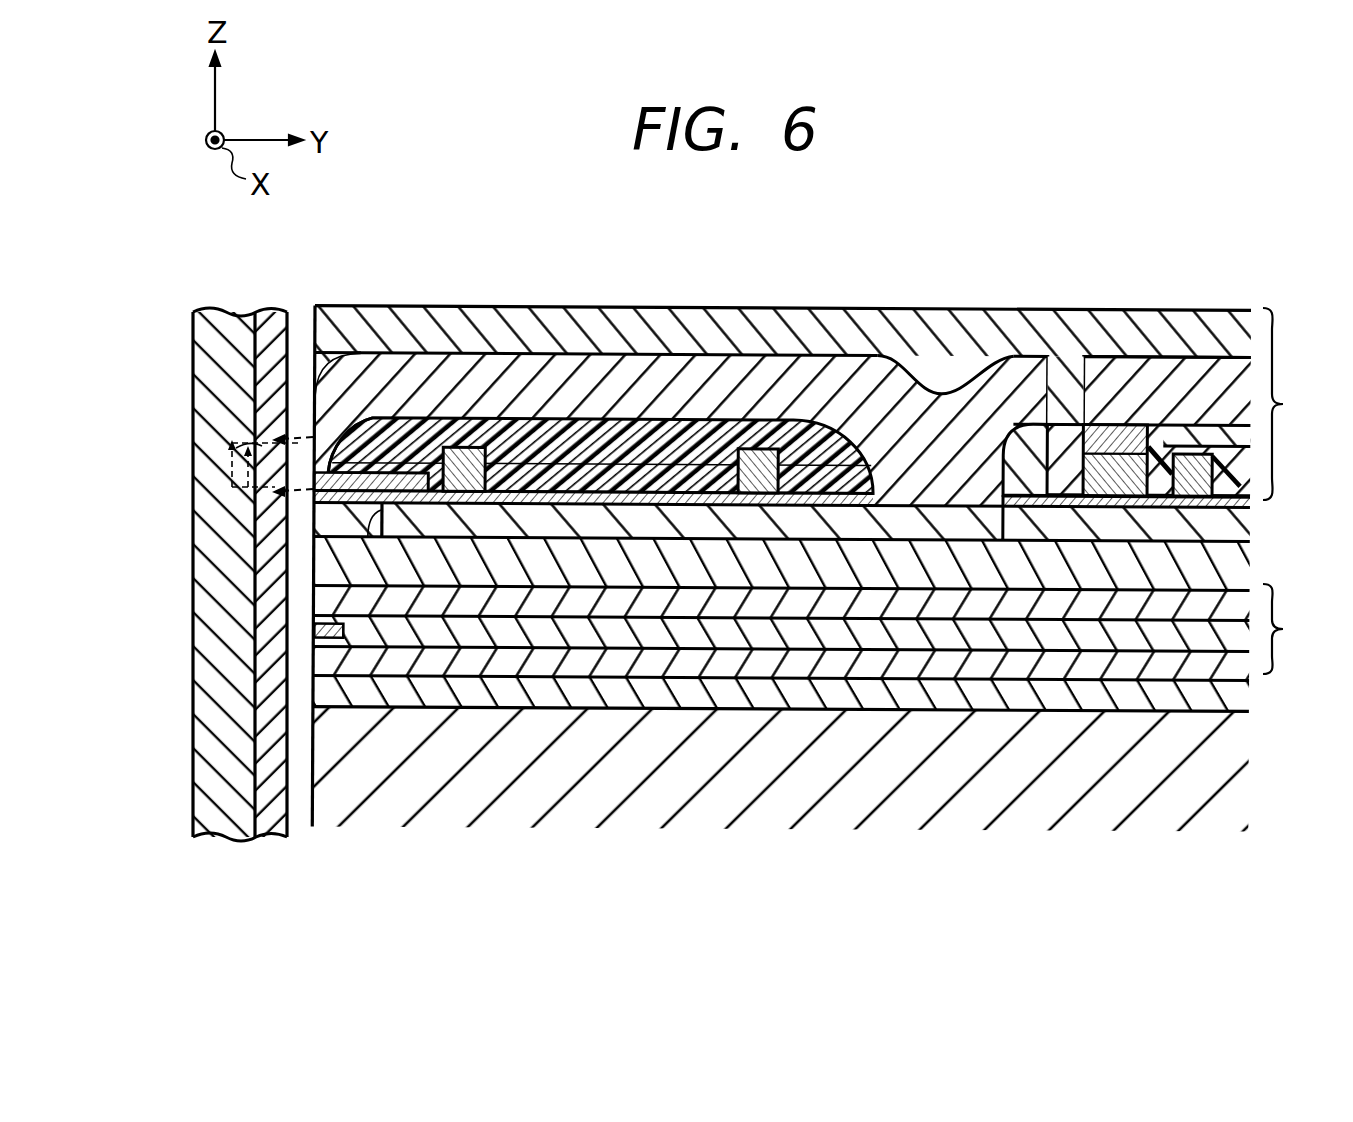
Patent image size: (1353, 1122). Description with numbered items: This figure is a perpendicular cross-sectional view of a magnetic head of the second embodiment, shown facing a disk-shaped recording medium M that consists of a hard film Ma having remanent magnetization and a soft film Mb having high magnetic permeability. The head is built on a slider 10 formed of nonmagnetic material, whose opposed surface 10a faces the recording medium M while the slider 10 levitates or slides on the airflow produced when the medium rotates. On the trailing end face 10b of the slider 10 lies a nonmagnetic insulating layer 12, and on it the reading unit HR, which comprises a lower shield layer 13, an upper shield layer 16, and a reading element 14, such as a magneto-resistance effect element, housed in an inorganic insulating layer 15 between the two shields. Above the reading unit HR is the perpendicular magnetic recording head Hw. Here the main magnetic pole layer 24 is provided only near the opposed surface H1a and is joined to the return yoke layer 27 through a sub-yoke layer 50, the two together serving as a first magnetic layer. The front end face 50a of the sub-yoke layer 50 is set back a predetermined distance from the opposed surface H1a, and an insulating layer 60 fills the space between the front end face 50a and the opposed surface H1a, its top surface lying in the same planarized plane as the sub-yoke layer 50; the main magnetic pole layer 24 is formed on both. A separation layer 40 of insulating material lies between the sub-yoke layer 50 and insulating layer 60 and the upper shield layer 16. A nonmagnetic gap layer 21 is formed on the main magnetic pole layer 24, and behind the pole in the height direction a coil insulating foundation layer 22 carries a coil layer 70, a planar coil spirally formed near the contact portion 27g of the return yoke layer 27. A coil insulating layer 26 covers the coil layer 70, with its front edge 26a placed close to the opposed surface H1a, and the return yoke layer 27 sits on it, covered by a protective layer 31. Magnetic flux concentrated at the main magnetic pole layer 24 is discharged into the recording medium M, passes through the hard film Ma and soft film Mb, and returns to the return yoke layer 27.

The slider 10 is at (1170, 790).
The opposed surface 10a is at (313, 762).
The trailing end face 10b is at (770, 707).
The nonmagnetic insulating layer 12 is at (611, 695).
The lower shield layer 13 is at (1010, 660).
The reading element 14 is at (315, 631).
The inorganic insulating layer 15 is at (927, 640).
The upper shield layer 16 is at (520, 607).
The nonmagnetic gap layer 21 is at (372, 425).
The coil insulating foundation layer 22 is at (666, 507).
The main magnetic pole layer 24 is at (398, 505).
The coil insulating layer 26 is at (622, 445).
The front edge of the coil insulating layer 26a is at (333, 470).
The return yoke layer 27 is at (700, 370).
The contact portion 27g is at (943, 440).
The protective layer 31 is at (1022, 352).
The separation layer 40 is at (1088, 570).
The sub-yoke layer 50 is at (850, 527).
The front end face of the sub-yoke layer 50a is at (367, 540).
The insulating layer 60 is at (320, 517).
The coil layer 70 is at (455, 447).
The opposed surface H1a is at (313, 463).
The recording medium M is at (205, 621).
The hard film Ma is at (218, 797).
The soft film Mb is at (265, 757).
The perpendicular magnetic recording head Hw is at (1299, 404).
The reading unit HR is at (1295, 629).